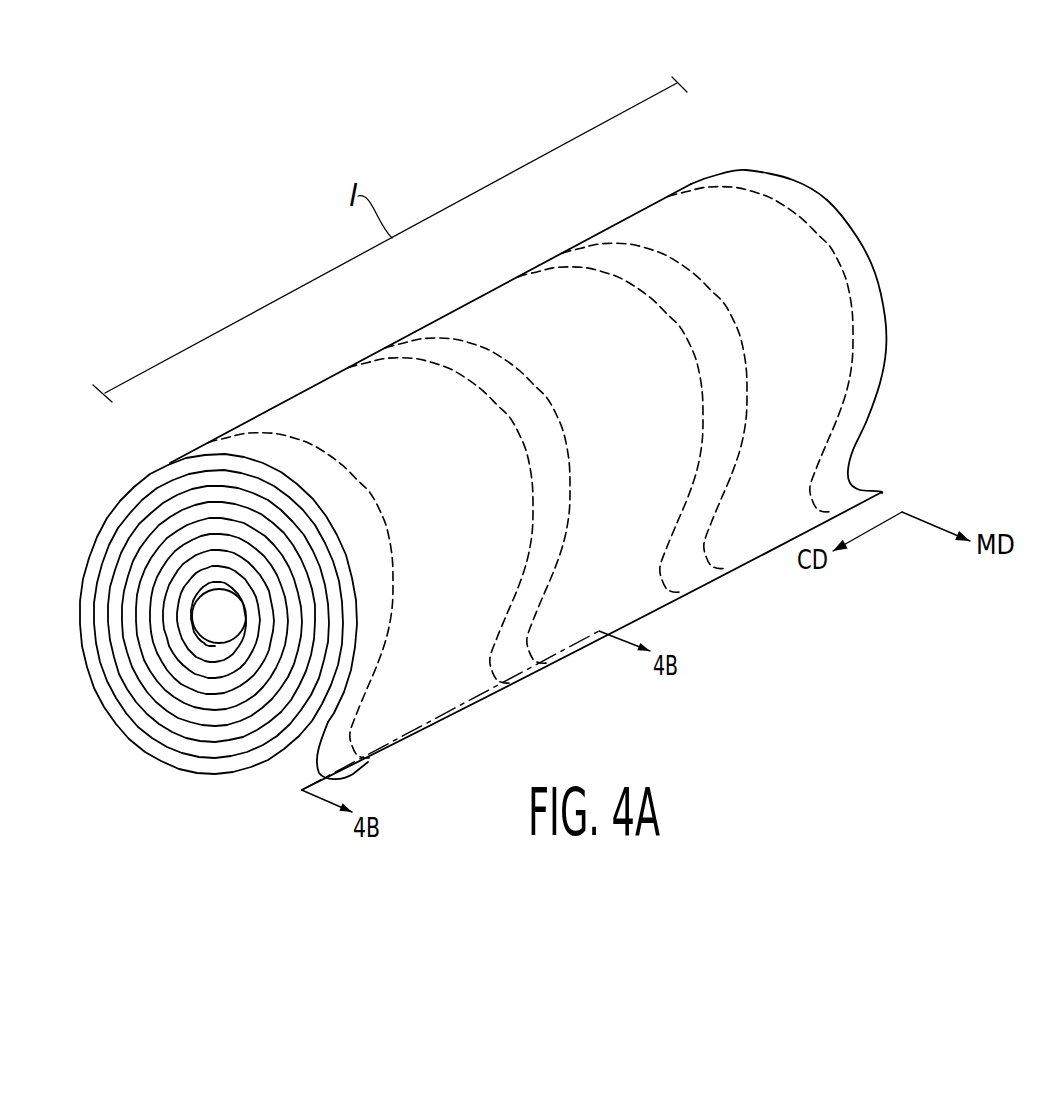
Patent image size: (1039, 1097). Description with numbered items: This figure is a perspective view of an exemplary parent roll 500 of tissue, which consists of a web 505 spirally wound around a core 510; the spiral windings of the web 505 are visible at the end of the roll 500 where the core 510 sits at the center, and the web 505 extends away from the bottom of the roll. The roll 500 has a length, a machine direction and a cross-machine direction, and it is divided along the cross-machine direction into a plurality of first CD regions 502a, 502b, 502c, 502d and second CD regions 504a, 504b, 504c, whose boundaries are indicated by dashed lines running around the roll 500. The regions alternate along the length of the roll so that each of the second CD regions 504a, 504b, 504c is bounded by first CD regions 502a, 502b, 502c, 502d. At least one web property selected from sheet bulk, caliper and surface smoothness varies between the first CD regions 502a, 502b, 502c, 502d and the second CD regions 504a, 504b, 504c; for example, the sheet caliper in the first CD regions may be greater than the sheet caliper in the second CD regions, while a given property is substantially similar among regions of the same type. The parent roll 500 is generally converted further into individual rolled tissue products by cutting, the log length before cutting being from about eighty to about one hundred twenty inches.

The parent roll 500 is at (497, 438).
The first CD region 502a is at (210, 430).
The first CD region 502b is at (399, 330).
The first CD region 502c is at (565, 243).
The first CD region 502d is at (719, 161).
The second CD region 504a is at (335, 364).
The second CD region 504b is at (512, 271).
The second CD region 504c is at (672, 186).
The web 505 is at (738, 534).
The core 510 is at (222, 615).